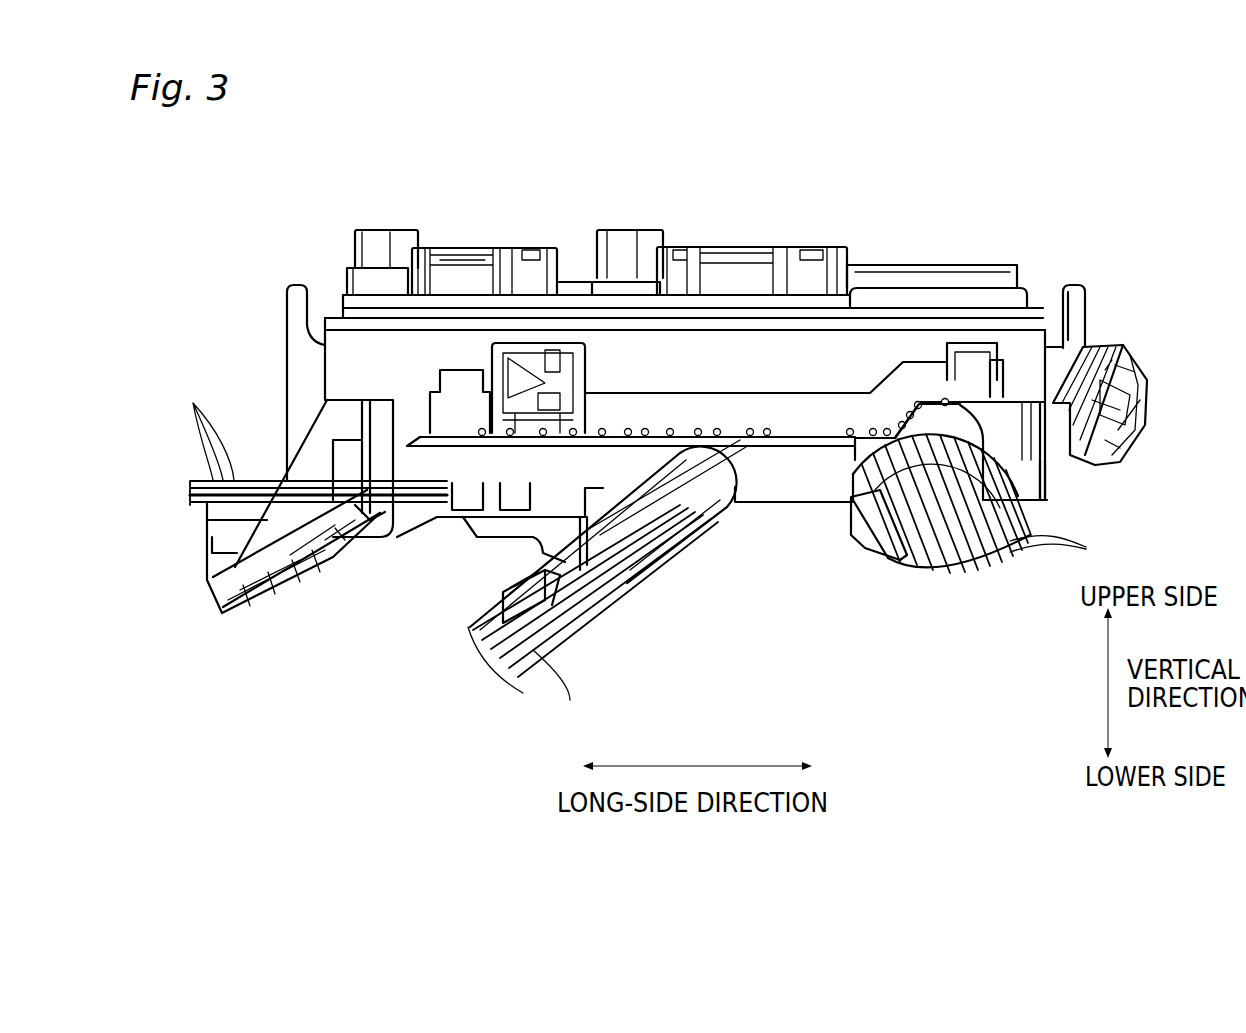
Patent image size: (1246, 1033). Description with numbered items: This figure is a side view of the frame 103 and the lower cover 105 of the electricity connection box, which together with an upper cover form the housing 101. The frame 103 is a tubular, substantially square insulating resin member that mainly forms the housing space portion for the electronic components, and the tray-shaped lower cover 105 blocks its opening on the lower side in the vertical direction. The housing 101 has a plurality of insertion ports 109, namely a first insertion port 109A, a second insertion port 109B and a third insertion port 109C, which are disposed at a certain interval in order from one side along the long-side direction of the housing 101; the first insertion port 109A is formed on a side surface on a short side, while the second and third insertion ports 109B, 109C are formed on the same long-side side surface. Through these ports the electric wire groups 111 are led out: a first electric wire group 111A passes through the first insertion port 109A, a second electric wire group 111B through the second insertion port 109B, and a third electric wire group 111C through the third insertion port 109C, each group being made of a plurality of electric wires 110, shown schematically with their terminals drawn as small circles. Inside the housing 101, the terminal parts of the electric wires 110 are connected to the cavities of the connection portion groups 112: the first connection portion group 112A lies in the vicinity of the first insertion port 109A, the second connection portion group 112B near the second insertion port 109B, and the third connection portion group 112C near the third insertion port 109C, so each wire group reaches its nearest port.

The housing 101 is at (735, 390).
The frame 103 is at (1049, 329).
The lower cover 105 is at (1060, 474).
The insertion port 109 is at (579, 534).
The first insertion port 109A is at (207, 520).
The second insertion port 109B is at (604, 598).
The third insertion port 109C is at (915, 562).
The electric wire 110 is at (649, 552).
The electric wire group 111 is at (568, 505).
The first electric wire group 111A is at (250, 471).
The second electric wire group 111B is at (488, 610).
The third electric wire group 111C is at (868, 543).
The connection portion group 112 is at (691, 316).
The first connection portion group 112A is at (474, 411).
The second connection portion group 112B is at (690, 426).
The third connection portion group 112C is at (913, 398).